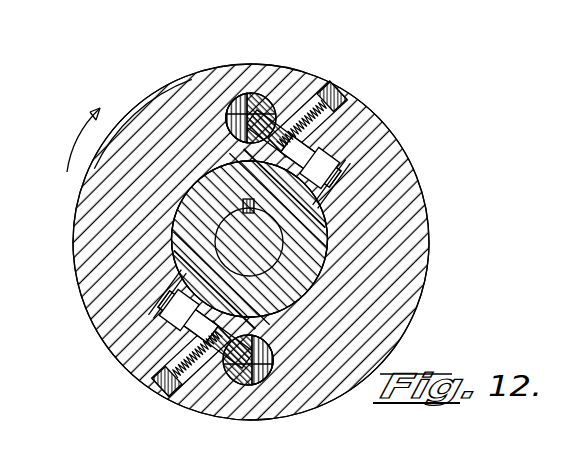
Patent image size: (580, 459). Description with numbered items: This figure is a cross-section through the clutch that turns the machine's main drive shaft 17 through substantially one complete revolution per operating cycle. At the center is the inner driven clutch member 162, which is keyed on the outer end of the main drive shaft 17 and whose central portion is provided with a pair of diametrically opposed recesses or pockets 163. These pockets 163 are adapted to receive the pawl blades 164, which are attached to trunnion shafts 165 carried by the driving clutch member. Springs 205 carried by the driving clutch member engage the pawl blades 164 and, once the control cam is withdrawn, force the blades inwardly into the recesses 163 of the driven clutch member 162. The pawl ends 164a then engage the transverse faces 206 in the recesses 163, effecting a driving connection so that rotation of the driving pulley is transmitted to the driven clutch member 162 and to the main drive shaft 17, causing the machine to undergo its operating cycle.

The main drive shaft 17 is at (240, 242).
The inner driven clutch member 162 is at (312, 246).
The recesses or pockets 163 is at (340, 152).
The pawl blades 164 is at (330, 140).
The pawl ends 164a is at (345, 175).
The trunnion shafts 165 is at (262, 94).
The springs 205 is at (322, 88).
The transverse faces 206 is at (305, 182).